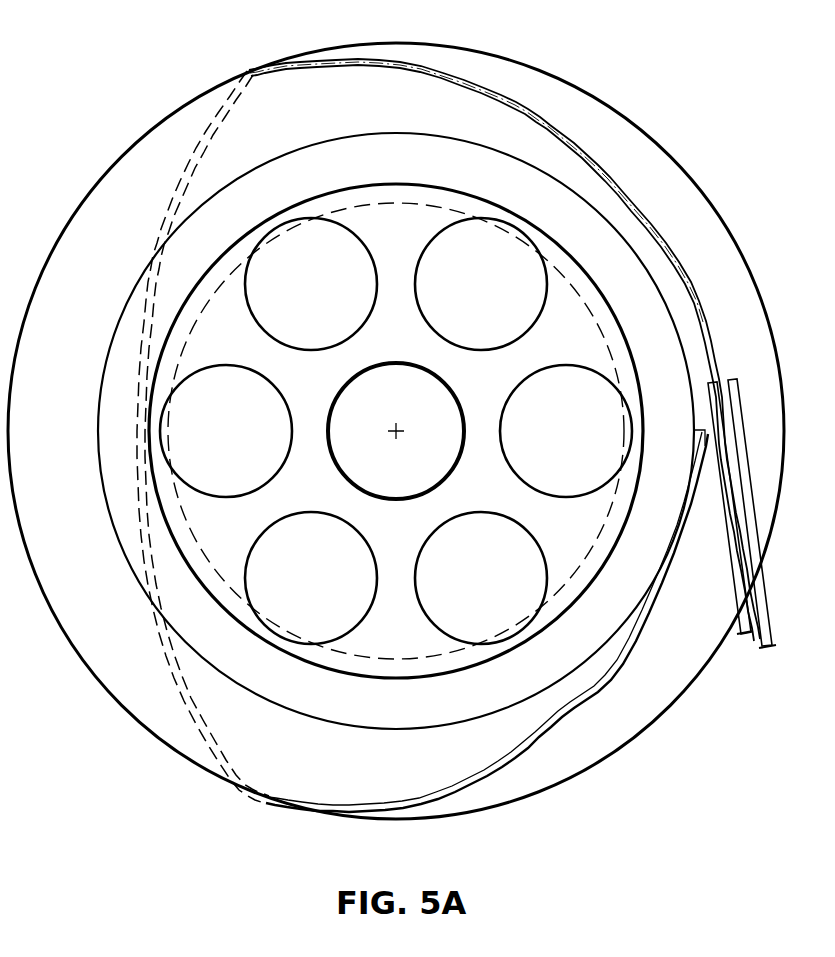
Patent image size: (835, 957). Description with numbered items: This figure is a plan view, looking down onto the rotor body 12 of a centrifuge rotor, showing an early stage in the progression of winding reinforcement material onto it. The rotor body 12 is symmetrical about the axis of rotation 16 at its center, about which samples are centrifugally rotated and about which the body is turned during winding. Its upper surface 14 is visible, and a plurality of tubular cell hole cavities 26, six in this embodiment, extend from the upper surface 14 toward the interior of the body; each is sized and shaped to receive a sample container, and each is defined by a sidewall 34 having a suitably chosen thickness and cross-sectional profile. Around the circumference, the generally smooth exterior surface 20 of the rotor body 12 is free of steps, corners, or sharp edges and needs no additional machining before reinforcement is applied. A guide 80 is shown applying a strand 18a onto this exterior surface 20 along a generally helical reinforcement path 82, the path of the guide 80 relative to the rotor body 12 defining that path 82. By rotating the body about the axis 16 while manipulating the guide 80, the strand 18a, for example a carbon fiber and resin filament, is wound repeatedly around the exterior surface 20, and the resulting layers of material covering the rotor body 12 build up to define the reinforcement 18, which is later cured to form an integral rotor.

The rotor body 12 is at (661, 144).
The exterior surface 20 is at (117, 188).
The reinforcement 18 is at (160, 308).
The strand 18a is at (481, 82).
The reinforcement path 82 is at (661, 242).
The guide 80 is at (735, 588).
The upper surface 14 is at (396, 431).
The axis of rotation 16 is at (398, 433).
The tubular cell hole cavities 26 is at (438, 431).
The sidewall 34 is at (527, 243).